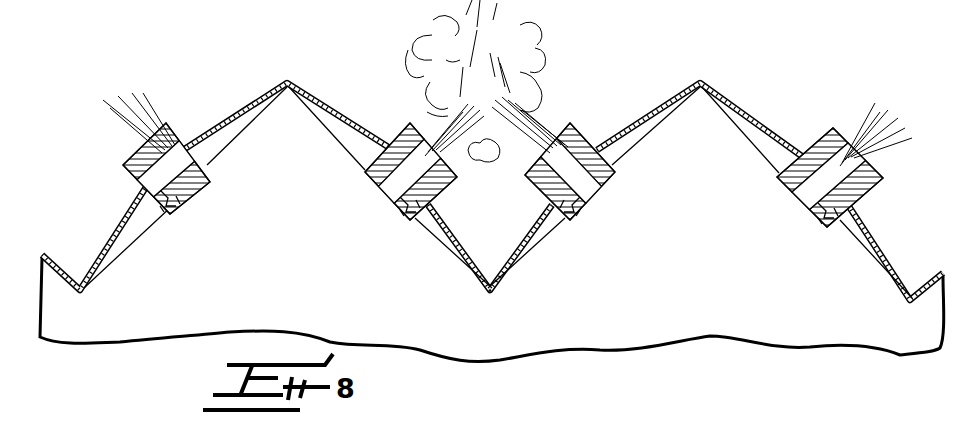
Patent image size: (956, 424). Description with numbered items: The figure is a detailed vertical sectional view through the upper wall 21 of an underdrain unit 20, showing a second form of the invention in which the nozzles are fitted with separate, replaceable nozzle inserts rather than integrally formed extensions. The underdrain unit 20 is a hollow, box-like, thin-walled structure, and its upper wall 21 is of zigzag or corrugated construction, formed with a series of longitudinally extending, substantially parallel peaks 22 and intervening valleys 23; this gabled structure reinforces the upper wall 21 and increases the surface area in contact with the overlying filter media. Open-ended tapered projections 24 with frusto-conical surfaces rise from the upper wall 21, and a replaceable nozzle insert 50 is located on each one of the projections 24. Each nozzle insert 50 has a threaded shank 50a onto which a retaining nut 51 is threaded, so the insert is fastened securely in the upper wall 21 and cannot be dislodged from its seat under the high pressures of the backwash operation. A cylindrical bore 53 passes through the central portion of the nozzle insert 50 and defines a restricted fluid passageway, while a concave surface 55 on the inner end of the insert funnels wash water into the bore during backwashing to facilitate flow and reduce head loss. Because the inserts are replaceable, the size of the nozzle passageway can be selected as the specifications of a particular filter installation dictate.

The underdrain unit 20 is at (797, 6).
The upper wall 21 is at (258, 104).
The peaks 22 is at (288, 82).
The valleys 23 is at (490, 288).
The tapered projections 24 is at (128, 220).
The nozzle insert 50 is at (530, 171).
The threaded shank 50a is at (178, 212).
The retaining nut 51 is at (208, 159).
The cylindrical bore 53 is at (840, 150).
The concave surface 55 is at (395, 203).